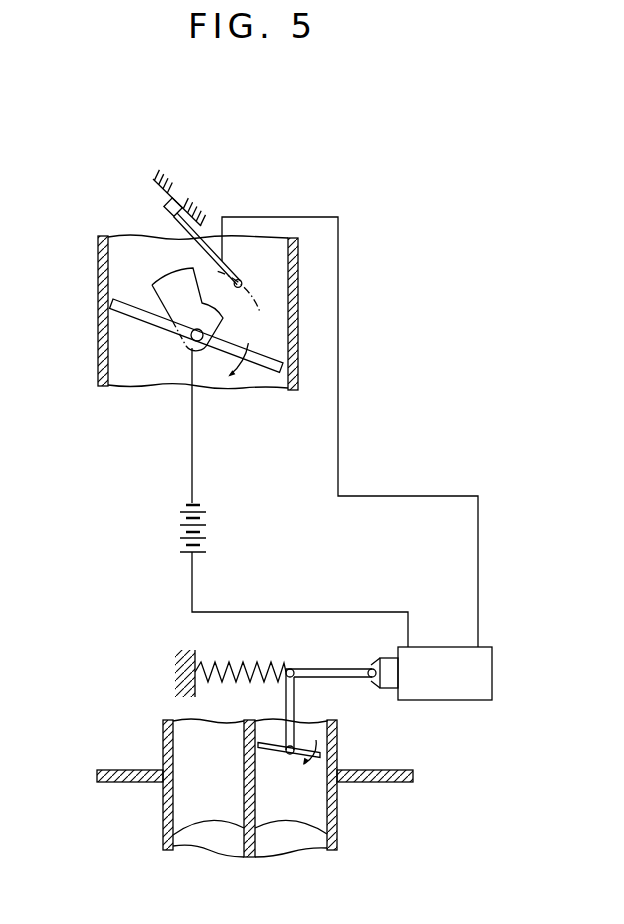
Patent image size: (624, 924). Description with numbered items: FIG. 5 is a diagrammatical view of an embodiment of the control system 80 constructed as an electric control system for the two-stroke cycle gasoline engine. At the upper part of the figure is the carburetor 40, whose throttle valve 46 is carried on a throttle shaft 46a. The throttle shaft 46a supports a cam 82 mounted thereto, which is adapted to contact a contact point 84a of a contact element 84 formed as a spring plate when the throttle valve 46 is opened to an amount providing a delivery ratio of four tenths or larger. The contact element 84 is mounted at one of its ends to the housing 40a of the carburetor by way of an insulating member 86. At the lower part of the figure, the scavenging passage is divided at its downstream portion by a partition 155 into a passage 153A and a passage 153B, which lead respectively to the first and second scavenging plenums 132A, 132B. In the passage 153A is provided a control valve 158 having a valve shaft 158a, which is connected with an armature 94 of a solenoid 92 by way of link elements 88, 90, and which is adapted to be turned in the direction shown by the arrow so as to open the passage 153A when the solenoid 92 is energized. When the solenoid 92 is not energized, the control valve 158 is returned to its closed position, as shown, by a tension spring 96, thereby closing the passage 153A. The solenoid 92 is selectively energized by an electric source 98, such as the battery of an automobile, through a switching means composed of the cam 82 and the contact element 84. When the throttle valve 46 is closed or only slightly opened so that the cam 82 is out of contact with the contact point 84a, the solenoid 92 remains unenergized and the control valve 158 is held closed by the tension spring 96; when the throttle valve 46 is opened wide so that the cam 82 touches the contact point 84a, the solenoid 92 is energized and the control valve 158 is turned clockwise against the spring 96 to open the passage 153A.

The carburetor 40 is at (92, 295).
The housing of the carburetor 40a is at (183, 197).
The throttle valve 46 is at (259, 367).
The throttle shaft 46a is at (186, 341).
The control system 80 is at (345, 393).
The cam 82 is at (162, 274).
The contact element 84 is at (175, 219).
The contact point 84a is at (237, 289).
The insulating member 86 is at (165, 207).
The link element 88 is at (295, 699).
The link element 90 is at (325, 668).
The solenoid 92 is at (457, 700).
The armature 94 is at (391, 689).
The tension spring 96 is at (238, 662).
The electric source 98 is at (179, 528).
The first scavenging plenum 132A is at (312, 840).
The second scavenging plenum 132B is at (208, 848).
The passage 153A is at (315, 807).
The passage 153B is at (185, 803).
The partition 155 is at (248, 850).
The control valve 158 is at (322, 747).
The valve shaft 158a is at (290, 755).